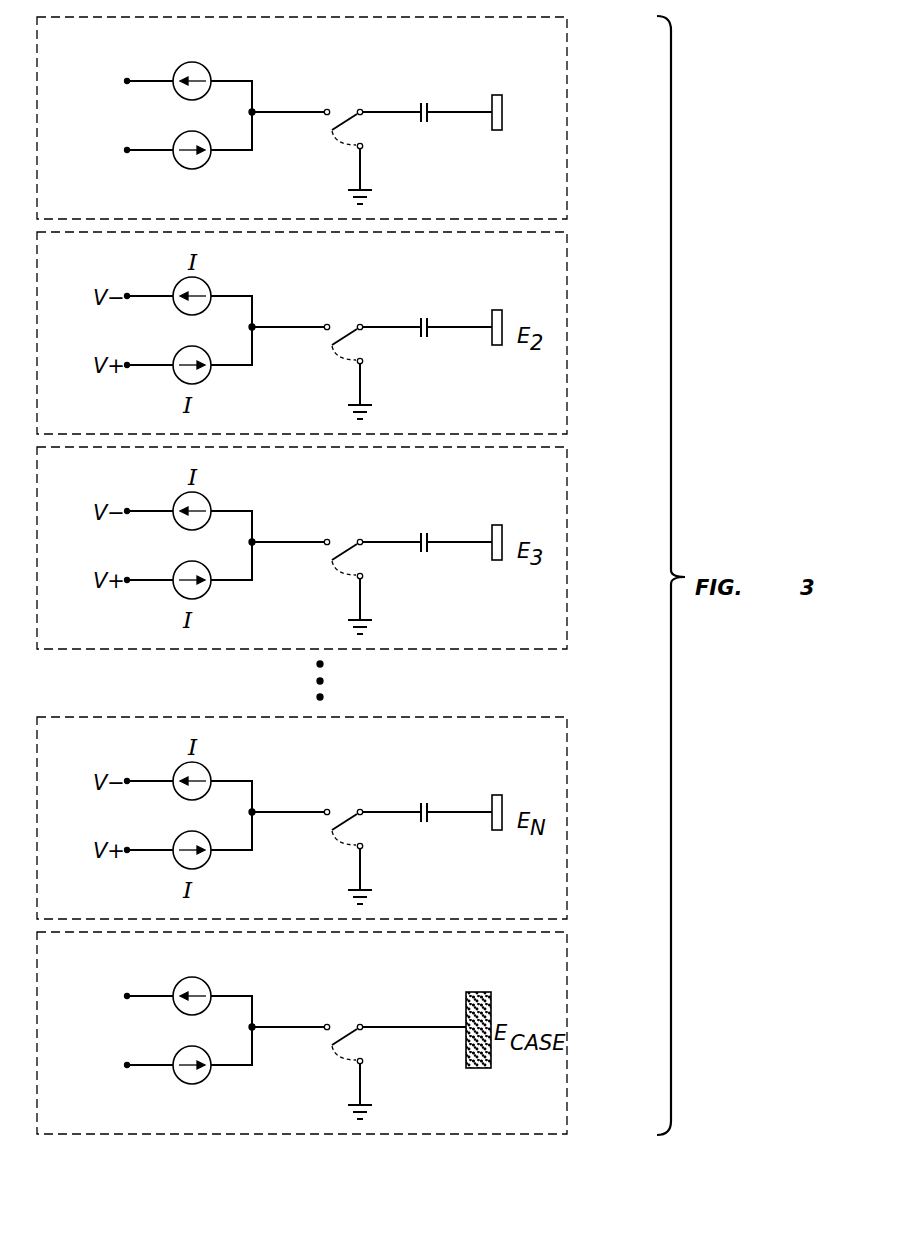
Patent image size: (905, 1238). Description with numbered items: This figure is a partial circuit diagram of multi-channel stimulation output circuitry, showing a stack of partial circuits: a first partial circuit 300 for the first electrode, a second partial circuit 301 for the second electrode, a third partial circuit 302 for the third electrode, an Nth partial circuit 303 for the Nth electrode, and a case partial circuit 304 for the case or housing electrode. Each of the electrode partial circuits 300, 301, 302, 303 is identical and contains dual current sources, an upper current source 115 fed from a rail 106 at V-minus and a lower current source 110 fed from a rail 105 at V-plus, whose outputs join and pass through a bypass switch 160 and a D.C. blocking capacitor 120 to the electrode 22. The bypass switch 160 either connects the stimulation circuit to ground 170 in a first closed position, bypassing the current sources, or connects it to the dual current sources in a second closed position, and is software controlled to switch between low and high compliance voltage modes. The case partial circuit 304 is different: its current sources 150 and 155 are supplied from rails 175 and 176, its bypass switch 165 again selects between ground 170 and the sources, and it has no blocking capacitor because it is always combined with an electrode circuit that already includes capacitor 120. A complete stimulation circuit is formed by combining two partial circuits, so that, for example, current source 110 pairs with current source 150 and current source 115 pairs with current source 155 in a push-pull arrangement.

The rail 105 is at (127, 152).
The rail 106 is at (127, 79).
The current source 110 is at (205, 164).
The current source 115 is at (205, 67).
The D.C. blocking capacitor 120 is at (424, 103).
The electrode 22 is at (498, 95).
The bypass switch 160 is at (345, 122).
The bypass switch 165 is at (335, 1018).
The ground 170 is at (378, 190).
The current source 150 is at (233, 982).
The current source 155 is at (233, 1082).
The rail 175 is at (106, 976).
The rail 176 is at (106, 1091).
The partial circuit CIR1 300 is at (567, 73).
The partial circuit CIR2 301 is at (341, 333).
The partial circuit CIR3 302 is at (341, 548).
The partial circuit CIRN 303 is at (341, 818).
The case partial circuit CIRCASE 304 is at (348, 1033).